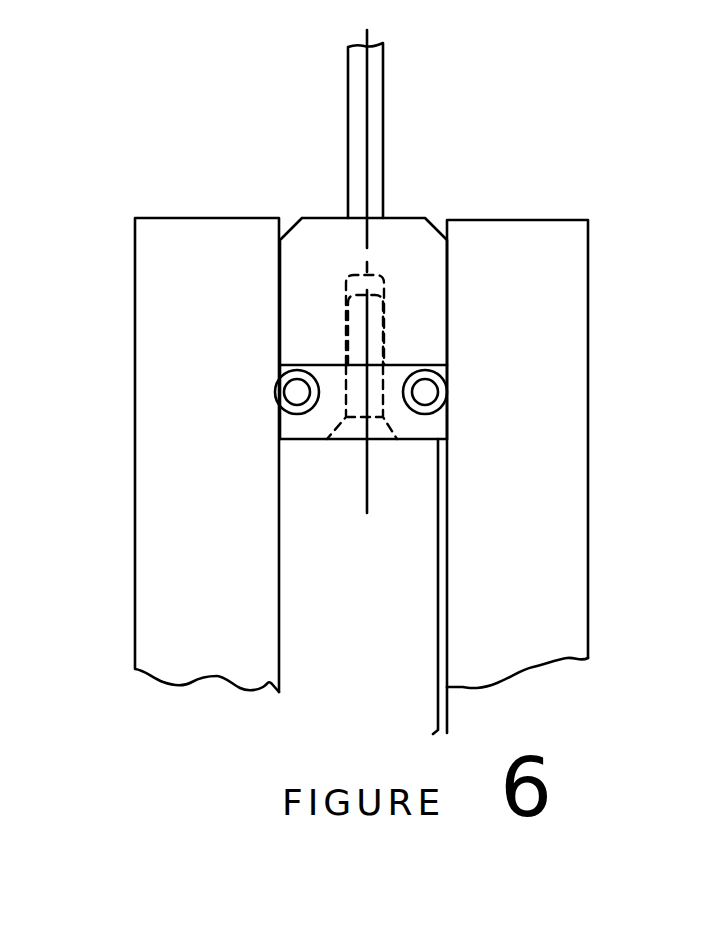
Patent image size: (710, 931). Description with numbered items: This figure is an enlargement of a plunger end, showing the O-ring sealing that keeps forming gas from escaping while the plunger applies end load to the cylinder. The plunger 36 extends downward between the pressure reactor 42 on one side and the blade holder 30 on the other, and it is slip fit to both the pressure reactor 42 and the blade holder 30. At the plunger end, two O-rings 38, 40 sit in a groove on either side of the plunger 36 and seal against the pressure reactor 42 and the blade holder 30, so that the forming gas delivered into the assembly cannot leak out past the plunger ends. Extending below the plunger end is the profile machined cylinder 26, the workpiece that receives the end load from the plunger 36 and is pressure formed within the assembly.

The profile machined cylinder 26 is at (450, 718).
The preform blade holder 30 is at (570, 213).
The plunger 36 is at (385, 123).
The O-ring 38 is at (445, 390).
The O-ring 40 is at (277, 393).
The pressure reactor 42 is at (135, 280).